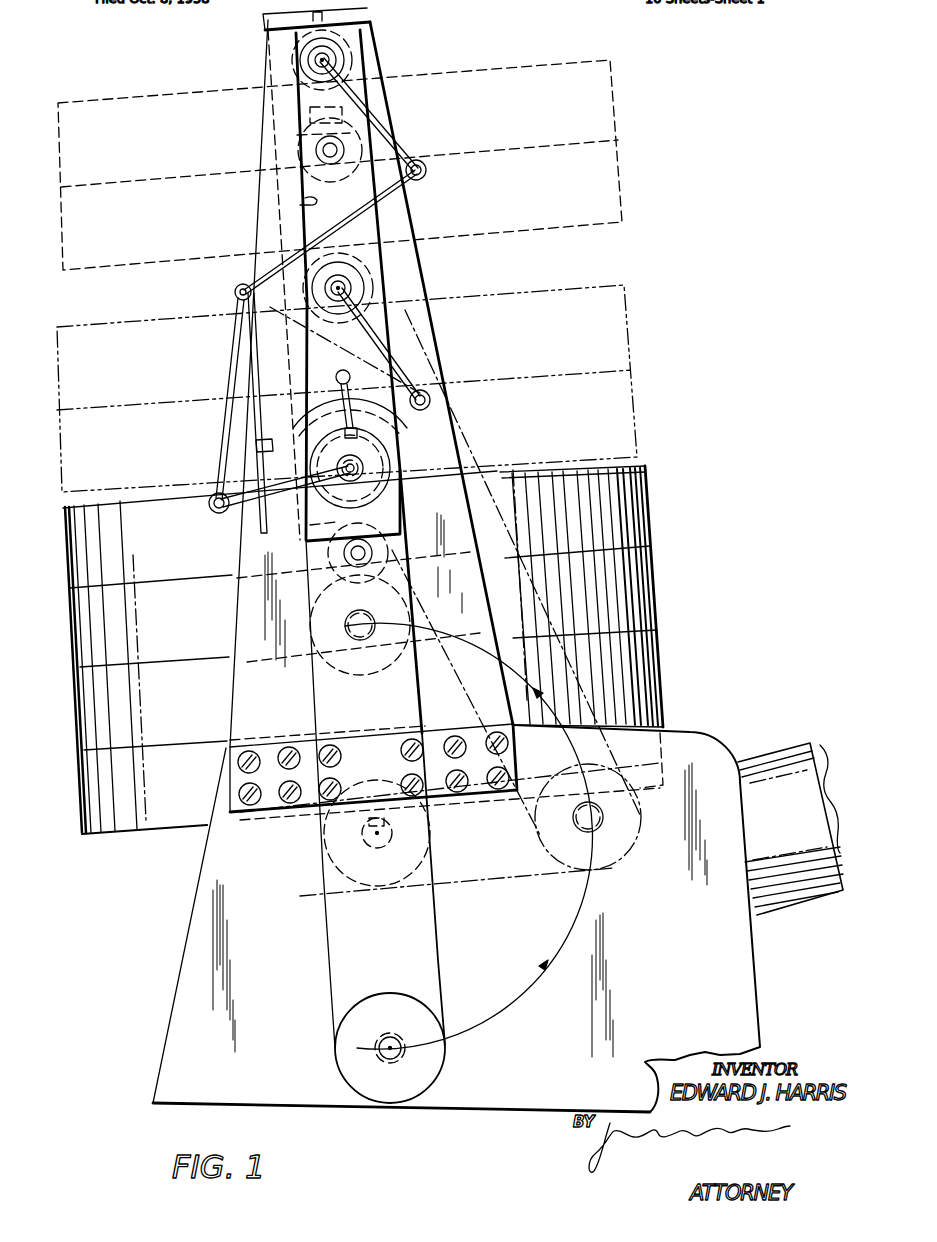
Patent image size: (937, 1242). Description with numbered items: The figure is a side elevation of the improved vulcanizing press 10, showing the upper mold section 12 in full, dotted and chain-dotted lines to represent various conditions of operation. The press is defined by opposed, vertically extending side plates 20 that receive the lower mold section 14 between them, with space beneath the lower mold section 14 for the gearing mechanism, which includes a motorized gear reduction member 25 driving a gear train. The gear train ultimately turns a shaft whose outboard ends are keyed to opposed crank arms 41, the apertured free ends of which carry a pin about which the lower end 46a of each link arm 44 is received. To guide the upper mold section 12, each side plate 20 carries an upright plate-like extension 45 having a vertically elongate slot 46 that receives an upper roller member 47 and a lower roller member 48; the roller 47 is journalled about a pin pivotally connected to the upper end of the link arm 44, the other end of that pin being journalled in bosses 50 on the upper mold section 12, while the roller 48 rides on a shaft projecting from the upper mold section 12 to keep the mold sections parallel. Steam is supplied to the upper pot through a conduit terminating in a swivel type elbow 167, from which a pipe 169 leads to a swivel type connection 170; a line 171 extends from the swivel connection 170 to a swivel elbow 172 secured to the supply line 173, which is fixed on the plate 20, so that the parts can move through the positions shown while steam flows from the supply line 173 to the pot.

The vulcanizing press 10 is at (431, 812).
The upper mold section 12 is at (618, 102).
The lower mold section 14 is at (152, 836).
The side plate 20 is at (162, 1050).
The motorized gear reduction member 25 is at (780, 767).
The crank arm 41 is at (515, 877).
The link arm 44 is at (282, 204).
The upright plate-like extension 45 is at (258, 142).
The slot 46 is at (251, 806).
The plate hook 46a is at (302, 204).
The roller member 47 is at (316, 436).
The roller member 48 is at (308, 540).
The boss 50 is at (383, 443).
The swivel type elbow 167 is at (363, 478).
The pipe 169 is at (237, 508).
The swivel type connection 170 is at (209, 512).
The line 171 is at (224, 424).
The swivel elbow 172 is at (234, 294).
The supply line 173 is at (247, 386).